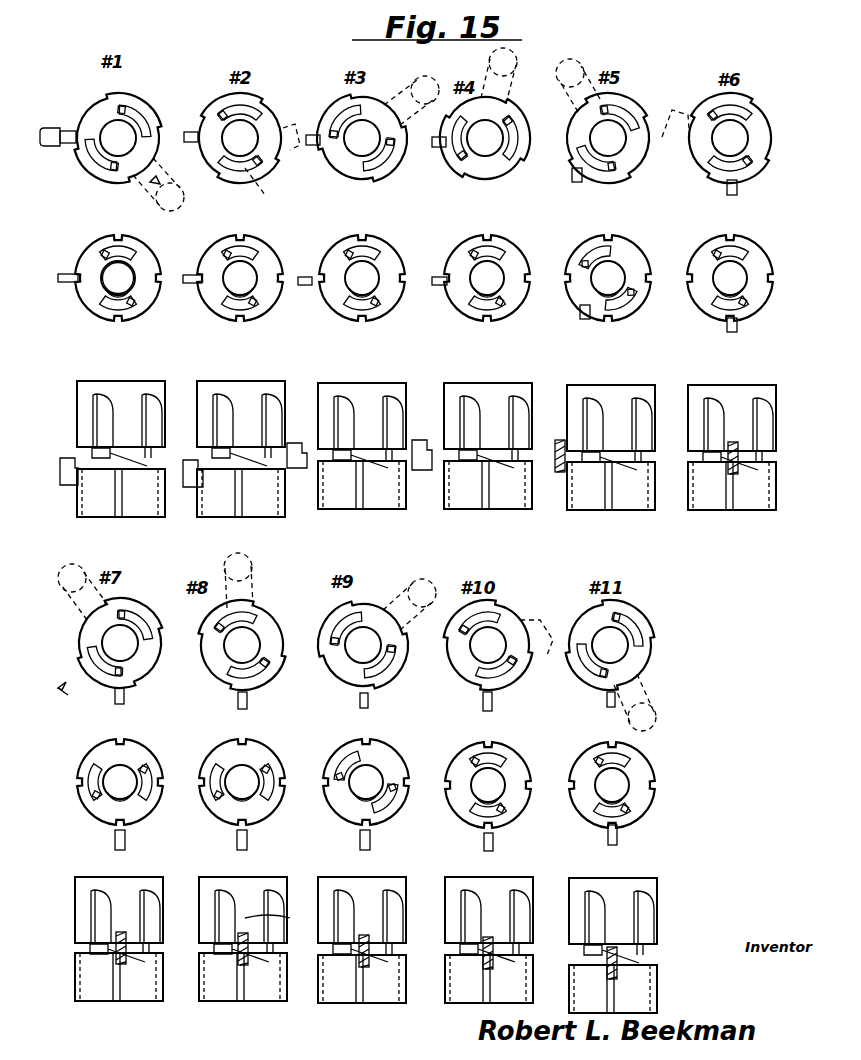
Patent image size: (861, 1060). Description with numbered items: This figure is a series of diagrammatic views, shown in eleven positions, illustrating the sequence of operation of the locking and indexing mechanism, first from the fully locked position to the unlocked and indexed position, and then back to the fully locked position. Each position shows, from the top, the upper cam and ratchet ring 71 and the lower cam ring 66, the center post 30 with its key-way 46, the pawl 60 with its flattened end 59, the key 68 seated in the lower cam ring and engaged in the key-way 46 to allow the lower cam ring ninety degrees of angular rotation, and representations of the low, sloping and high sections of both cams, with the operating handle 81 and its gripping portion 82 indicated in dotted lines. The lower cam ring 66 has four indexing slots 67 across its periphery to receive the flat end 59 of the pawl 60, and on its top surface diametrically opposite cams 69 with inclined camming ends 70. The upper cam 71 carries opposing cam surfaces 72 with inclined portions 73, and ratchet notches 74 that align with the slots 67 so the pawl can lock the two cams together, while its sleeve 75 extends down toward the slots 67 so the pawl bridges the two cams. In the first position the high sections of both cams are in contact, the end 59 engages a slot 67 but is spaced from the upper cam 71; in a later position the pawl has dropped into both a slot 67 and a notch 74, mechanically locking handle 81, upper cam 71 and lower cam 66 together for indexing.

The center post 30 is at (93, 295).
The key-way 46 is at (424, 546).
The reduced flattened end portion 59 is at (413, 572).
The pawl 60 is at (384, 562).
The lower cam ring 66 is at (407, 632).
The indexing slots 67 is at (400, 622).
The key 68 is at (413, 550).
The cams 69 is at (408, 605).
The inclined camming ends 70 is at (426, 703).
The upper cam and ratchet ring 71 is at (403, 510).
The cam surfaces 72 is at (419, 521).
The inclined portions 73 is at (270, 509).
The tapered notches 74 is at (438, 511).
The sleeve 75 is at (281, 920).
The operating handle 81 is at (376, 390).
The gripping portion 82 is at (363, 383).